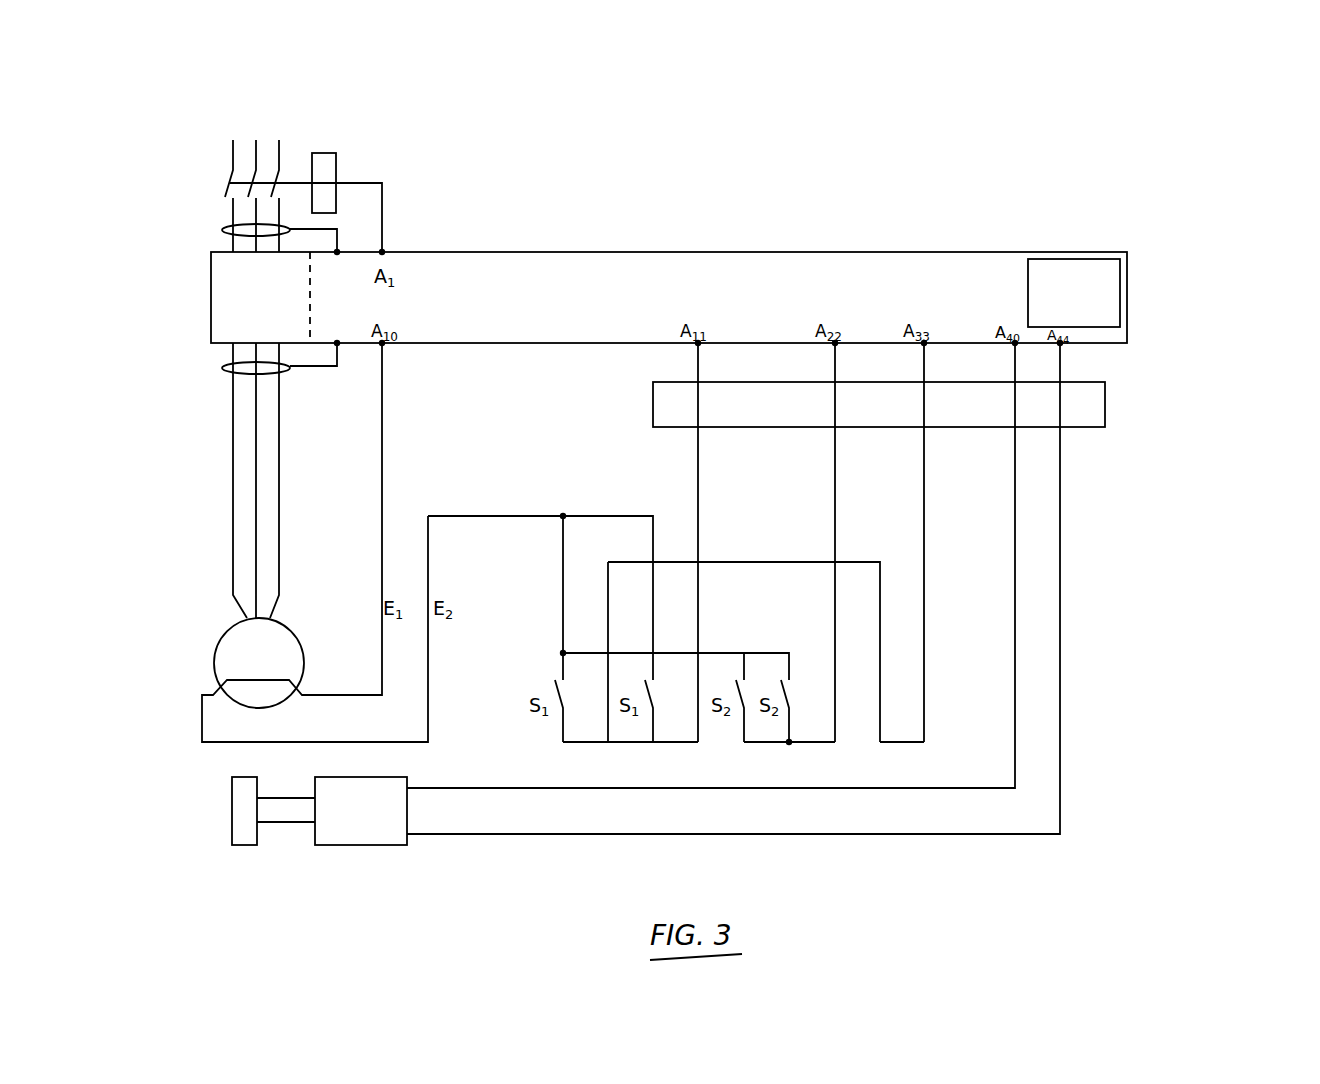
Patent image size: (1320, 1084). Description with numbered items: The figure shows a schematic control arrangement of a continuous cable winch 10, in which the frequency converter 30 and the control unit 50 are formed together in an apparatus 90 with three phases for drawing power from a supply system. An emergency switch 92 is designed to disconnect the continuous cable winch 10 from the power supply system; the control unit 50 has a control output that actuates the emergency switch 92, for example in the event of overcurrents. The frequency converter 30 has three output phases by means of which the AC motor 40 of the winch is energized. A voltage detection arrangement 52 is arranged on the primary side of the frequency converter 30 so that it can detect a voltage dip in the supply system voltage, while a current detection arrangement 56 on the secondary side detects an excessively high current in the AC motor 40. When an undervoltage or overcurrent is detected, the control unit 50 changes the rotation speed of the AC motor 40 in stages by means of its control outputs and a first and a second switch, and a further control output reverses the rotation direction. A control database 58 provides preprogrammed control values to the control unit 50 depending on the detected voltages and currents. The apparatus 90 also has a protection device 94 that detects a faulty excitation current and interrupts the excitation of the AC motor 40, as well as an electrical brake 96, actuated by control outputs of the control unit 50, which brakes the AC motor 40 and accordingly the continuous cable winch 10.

The continuous cable winch 10 is at (1136, 192).
The frequency converter 30 is at (226, 264).
The AC motor 40 is at (207, 659).
The control unit 50 is at (525, 265).
The voltage detection arrangement 52 is at (236, 224).
The current detection arrangement 56 is at (232, 373).
The control database 58 is at (1108, 293).
The apparatus 90 is at (232, 318).
The emergency switch 92 is at (324, 171).
The protection device 94 is at (1095, 399).
The electrical brake 96 is at (394, 834).